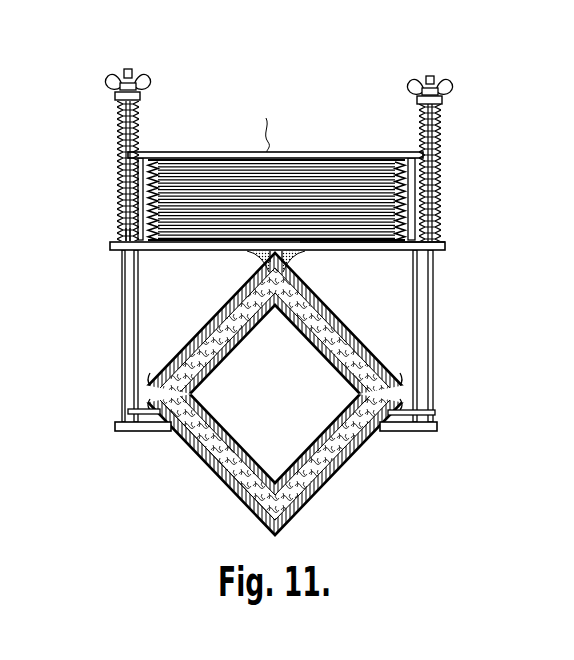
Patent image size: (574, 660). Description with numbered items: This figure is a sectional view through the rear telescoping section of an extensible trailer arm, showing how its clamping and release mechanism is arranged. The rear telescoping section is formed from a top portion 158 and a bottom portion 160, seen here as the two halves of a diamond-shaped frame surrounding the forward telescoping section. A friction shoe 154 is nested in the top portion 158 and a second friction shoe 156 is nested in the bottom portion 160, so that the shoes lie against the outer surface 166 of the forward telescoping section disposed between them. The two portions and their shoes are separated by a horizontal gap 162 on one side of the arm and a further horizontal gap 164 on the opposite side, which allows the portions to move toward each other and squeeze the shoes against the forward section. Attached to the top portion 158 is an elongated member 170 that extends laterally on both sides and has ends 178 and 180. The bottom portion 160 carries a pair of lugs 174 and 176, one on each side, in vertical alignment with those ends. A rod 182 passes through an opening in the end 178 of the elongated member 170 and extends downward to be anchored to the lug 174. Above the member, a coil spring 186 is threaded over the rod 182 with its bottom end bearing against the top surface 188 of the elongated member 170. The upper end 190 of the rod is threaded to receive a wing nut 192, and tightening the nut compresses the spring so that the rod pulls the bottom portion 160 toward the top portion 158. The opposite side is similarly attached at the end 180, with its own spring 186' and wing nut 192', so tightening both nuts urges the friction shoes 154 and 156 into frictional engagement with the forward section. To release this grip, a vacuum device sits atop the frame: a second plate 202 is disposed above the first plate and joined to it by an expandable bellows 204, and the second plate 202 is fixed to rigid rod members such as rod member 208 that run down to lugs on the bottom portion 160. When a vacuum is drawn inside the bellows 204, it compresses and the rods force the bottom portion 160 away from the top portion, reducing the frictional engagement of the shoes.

The friction shoe 154 is at (337, 472).
The friction shoe 156 is at (344, 340).
The top portion 158 is at (340, 314).
The bottom portion 160 is at (313, 496).
The horizontal gap 162 is at (392, 393).
The horizontal gap 164 is at (167, 392).
The outer surface 166 is at (218, 475).
The elongated member 170 is at (338, 255).
The lug 174 is at (124, 431).
The lug 176 is at (426, 431).
The end of elongated member 178 is at (112, 244).
The end of elongated member 180 is at (446, 246).
The rod 182 is at (122, 319).
The coil spring 186 is at (102, 171).
The coil spring 186' is at (459, 172).
The top surface 188 is at (119, 240).
The upper end of rod 190 is at (141, 96).
The wing nut 192 is at (106, 73).
The wing nut 192' is at (452, 77).
The second plate 202 is at (330, 132).
The expandable bellows 204 is at (158, 196).
The rod member 208 is at (138, 322).